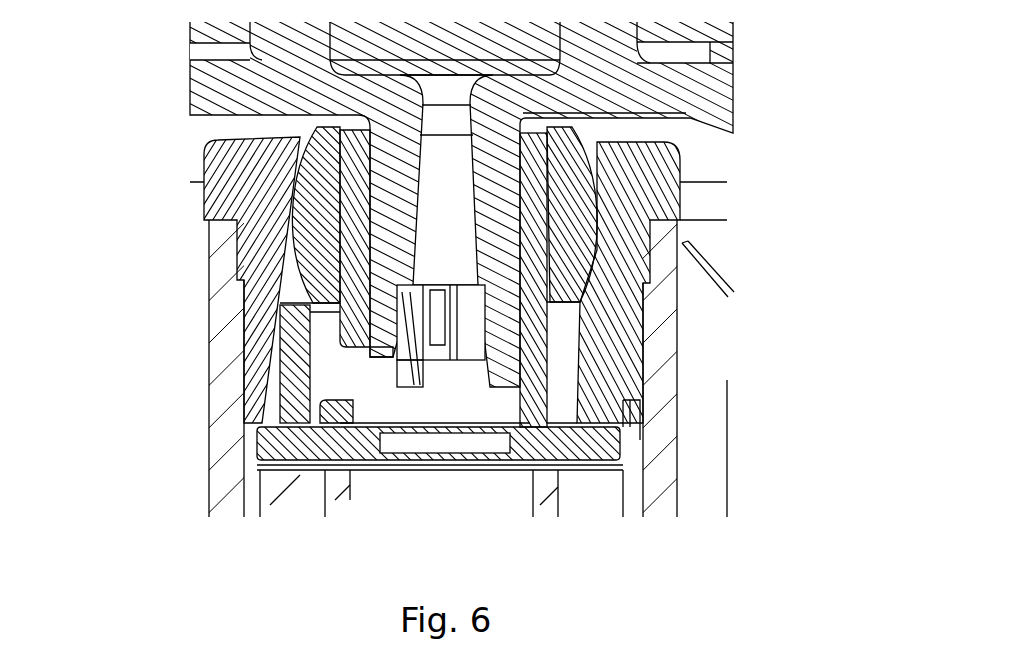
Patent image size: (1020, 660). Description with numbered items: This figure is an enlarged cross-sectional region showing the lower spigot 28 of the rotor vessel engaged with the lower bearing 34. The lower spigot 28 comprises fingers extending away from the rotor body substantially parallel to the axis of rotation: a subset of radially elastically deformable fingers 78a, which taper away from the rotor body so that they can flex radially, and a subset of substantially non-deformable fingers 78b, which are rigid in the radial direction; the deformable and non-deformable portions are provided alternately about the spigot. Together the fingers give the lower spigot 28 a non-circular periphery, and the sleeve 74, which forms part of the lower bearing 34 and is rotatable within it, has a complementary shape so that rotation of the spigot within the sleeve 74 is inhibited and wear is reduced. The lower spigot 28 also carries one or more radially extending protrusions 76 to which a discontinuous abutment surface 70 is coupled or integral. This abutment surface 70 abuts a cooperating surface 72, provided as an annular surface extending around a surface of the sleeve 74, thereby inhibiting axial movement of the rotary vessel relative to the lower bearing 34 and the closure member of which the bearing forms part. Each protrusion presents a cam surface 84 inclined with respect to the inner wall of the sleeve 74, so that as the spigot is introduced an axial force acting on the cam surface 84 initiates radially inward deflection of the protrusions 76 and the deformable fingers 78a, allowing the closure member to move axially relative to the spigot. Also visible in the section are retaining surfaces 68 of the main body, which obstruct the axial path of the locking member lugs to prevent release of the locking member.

The lower spigot 28 is at (368, 157).
The lower bearing 34 is at (680, 160).
The radially elastically deformable fingers 78a is at (370, 236).
The sleeve 74 is at (563, 233).
The cooperating surface 72 is at (356, 350).
The substantially non-deformable fingers 78b is at (520, 317).
The cam surface 84 is at (368, 353).
The protrusions 76 is at (376, 357).
The abutment surface 70 is at (382, 357).
The retaining surfaces 68 is at (520, 370).